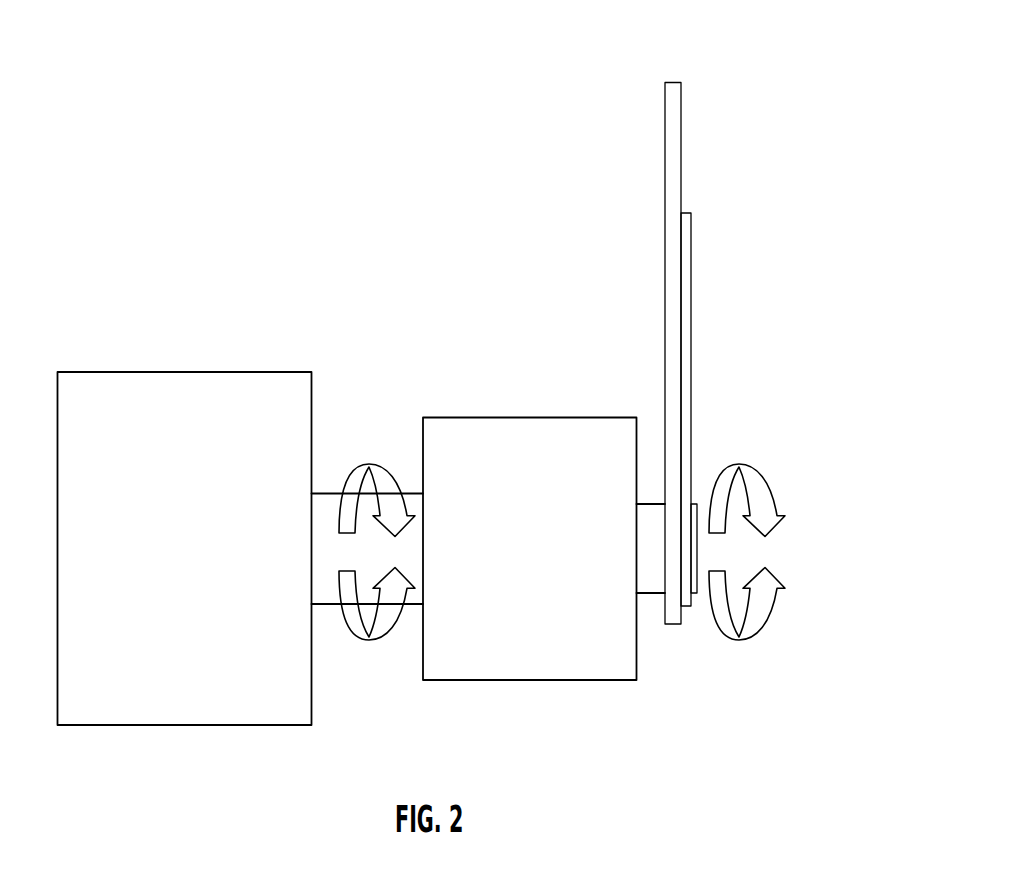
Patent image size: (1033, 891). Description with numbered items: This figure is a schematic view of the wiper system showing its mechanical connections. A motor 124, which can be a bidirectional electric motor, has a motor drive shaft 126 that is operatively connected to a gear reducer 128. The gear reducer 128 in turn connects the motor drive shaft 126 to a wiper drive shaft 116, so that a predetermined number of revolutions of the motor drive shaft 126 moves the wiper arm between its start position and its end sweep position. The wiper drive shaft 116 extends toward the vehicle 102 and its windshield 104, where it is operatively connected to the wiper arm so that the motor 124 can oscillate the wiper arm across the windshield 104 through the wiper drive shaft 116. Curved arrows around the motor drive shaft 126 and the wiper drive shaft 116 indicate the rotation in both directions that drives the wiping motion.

The vehicle 102 is at (672, 117).
The windshield 104 is at (692, 273).
The wiper drive shaft 116 is at (647, 578).
The motor 124 is at (110, 702).
The motor drive shaft 126 is at (327, 587).
The gear reducer 128 is at (513, 452).